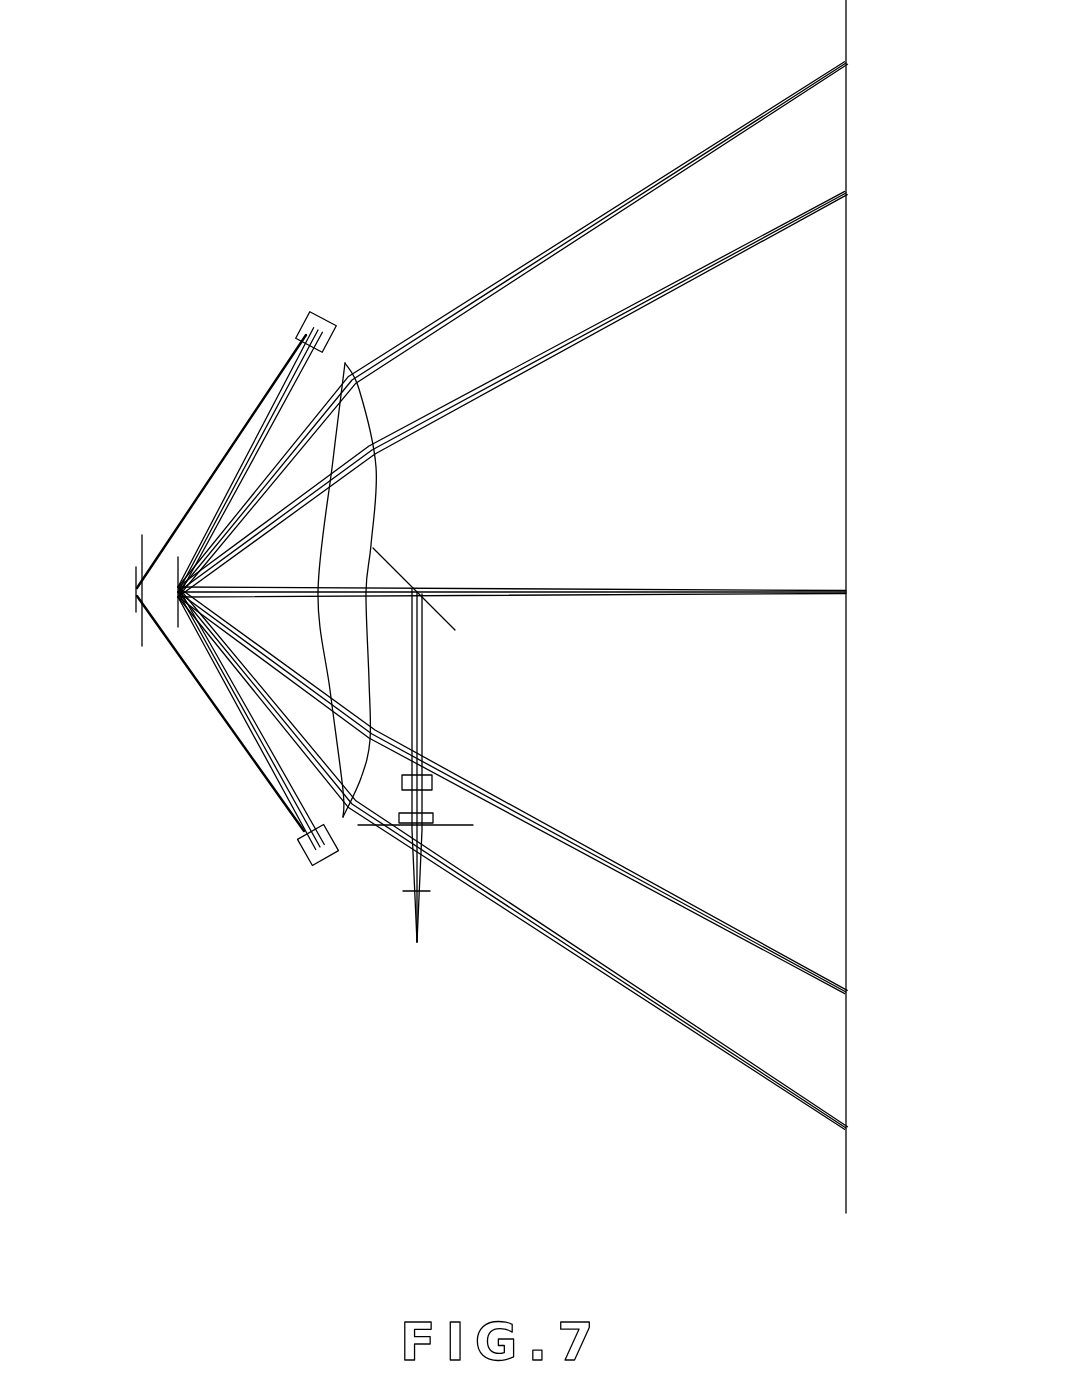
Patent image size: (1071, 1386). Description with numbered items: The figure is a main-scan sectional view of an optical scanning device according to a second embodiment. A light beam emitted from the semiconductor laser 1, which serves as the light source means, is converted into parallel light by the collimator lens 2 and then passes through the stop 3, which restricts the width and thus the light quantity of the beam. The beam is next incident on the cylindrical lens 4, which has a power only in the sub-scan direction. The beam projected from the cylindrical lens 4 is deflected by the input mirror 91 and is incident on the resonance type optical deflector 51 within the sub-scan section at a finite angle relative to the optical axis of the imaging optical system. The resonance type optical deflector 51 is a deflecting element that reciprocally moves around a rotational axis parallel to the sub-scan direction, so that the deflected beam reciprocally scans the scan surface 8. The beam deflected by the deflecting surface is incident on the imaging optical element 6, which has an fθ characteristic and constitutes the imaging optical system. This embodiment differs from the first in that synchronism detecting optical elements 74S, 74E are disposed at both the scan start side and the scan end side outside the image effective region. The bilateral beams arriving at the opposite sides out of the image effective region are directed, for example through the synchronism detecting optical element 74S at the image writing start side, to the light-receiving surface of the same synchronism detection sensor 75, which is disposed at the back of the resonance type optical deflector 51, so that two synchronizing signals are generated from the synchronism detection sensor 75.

The synchronism detection sensor 75 is at (136, 572).
The resonance type optical deflector 51 is at (177, 558).
The synchronism detecting optical element 74E is at (303, 313).
The synchronism detecting optical element 74S is at (316, 866).
The imaging optical element 6 is at (364, 397).
The input mirror 91 is at (396, 556).
The cylindrical lens 4 is at (437, 783).
The collimator lens 2 is at (433, 817).
The stop 3 is at (473, 826).
The semiconductor laser 1 is at (423, 890).
The scan surface 8 is at (847, 1160).